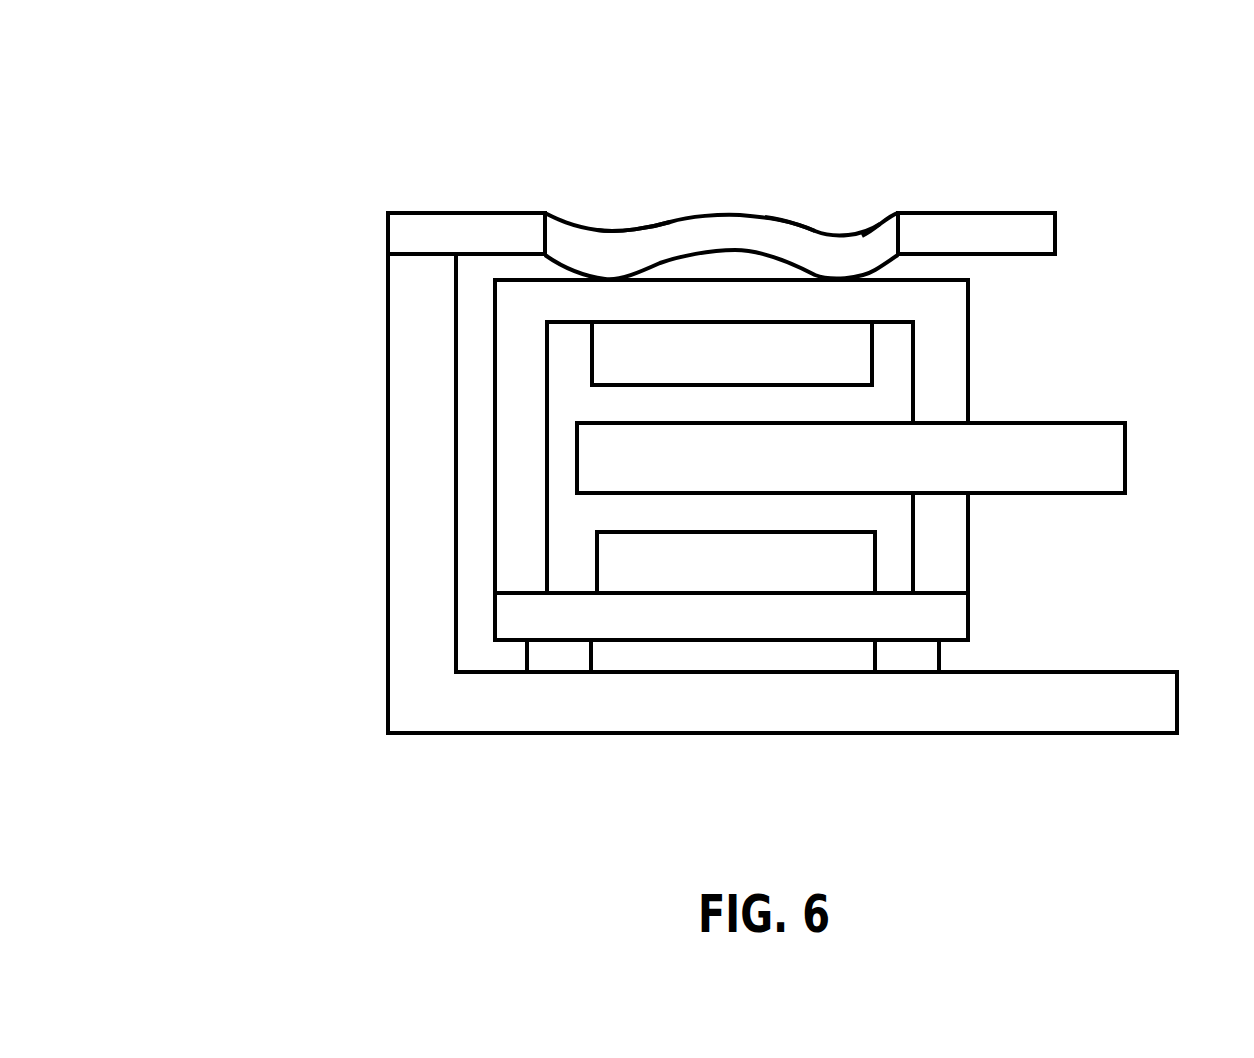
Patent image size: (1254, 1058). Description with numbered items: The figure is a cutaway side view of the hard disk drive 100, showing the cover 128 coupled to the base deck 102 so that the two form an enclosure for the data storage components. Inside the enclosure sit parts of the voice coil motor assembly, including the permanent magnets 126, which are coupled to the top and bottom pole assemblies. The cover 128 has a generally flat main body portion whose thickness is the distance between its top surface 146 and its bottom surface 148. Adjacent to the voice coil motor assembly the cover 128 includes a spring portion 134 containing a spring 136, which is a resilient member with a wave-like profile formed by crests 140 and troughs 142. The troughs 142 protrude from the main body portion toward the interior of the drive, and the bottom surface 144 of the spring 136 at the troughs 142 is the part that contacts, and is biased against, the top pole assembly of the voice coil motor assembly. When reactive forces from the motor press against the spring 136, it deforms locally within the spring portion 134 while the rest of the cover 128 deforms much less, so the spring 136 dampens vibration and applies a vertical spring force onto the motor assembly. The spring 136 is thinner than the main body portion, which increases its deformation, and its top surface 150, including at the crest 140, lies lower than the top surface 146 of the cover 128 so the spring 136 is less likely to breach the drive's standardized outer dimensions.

The hard disk drive 100 is at (365, 128).
The base deck 102 is at (393, 524).
The permanent magnet 126 is at (703, 371).
The cover 128 is at (416, 232).
The spring portion 134 is at (275, 237).
The spring 136 is at (881, 218).
The crest 140 is at (717, 214).
The trough 142 is at (612, 232).
The bottom surface 144 is at (617, 279).
The top surface 146 is at (1017, 213).
The bottom surface 148 is at (1021, 255).
The top surface 150 is at (800, 216).